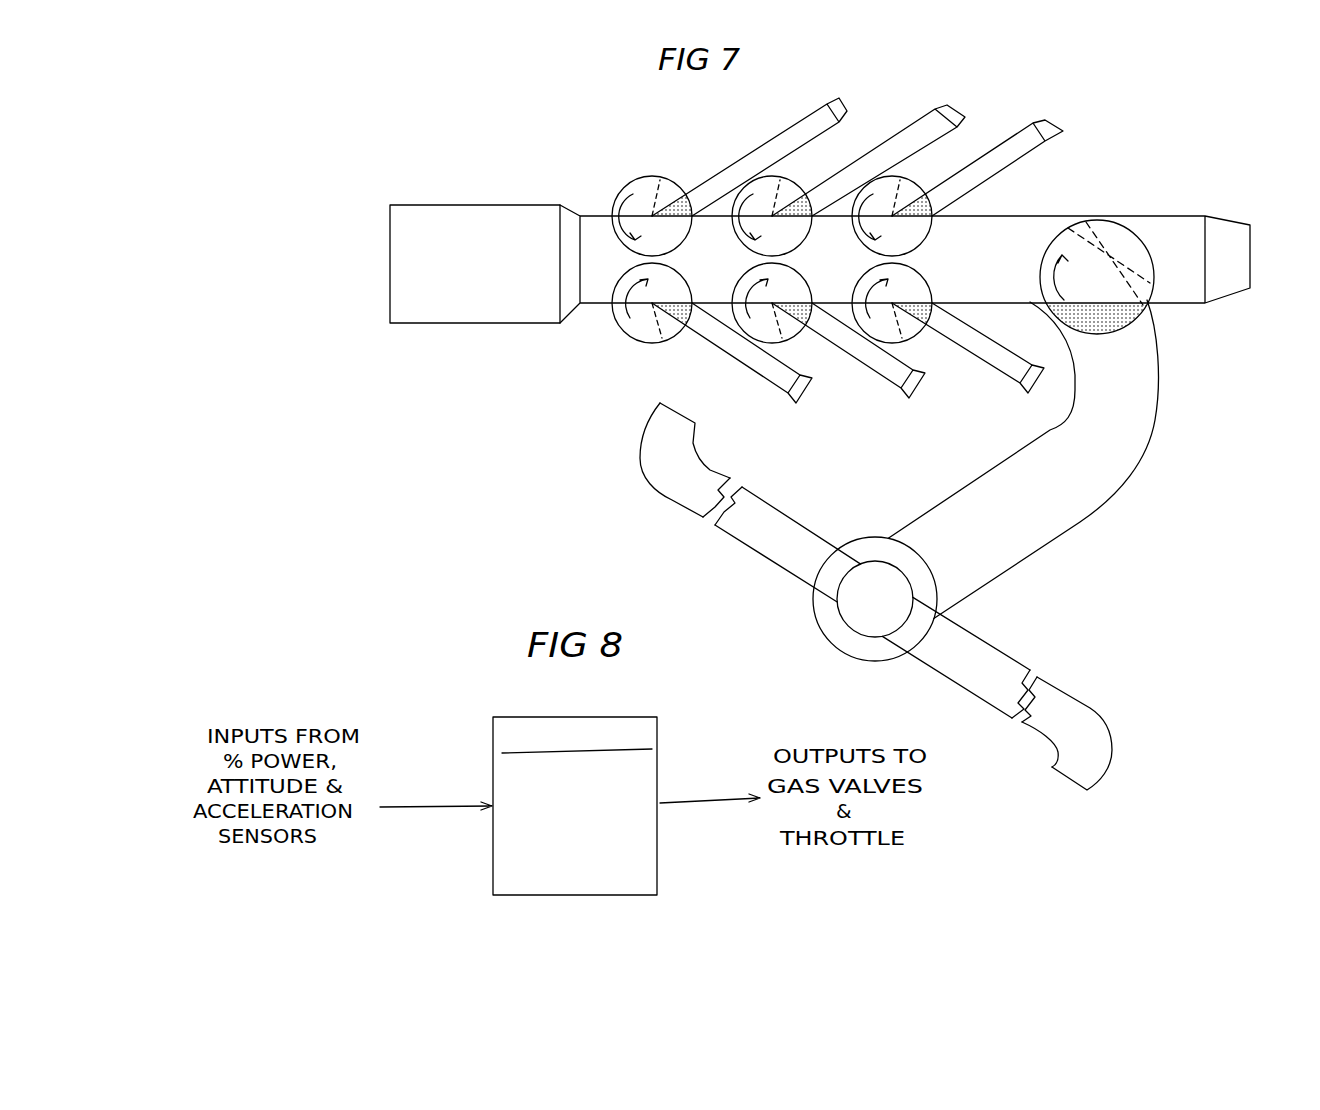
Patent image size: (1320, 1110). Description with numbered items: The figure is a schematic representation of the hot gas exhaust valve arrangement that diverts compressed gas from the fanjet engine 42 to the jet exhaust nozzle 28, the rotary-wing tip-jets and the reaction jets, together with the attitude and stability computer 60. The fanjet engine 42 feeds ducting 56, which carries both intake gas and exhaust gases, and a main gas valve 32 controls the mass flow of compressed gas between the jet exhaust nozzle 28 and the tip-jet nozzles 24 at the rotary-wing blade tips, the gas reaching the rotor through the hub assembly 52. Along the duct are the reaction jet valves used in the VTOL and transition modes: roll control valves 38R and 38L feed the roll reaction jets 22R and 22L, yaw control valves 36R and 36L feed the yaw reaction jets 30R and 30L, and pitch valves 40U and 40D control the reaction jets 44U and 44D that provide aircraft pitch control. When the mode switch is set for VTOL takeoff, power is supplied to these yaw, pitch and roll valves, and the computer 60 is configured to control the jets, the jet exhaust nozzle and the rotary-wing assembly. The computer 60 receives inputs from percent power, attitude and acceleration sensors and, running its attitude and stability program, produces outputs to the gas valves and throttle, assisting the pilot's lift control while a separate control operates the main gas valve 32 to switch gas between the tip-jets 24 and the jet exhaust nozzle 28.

In FIG. 7, the fanjet engine 42 is at (472, 217).
In FIG. 7, the jet exhaust nozzle 28 is at (1233, 237).
In FIG. 7, the roll control valve 38R is at (652, 183).
In FIG. 7, the roll control valve 38L is at (637, 330).
In FIG. 7, the yaw control valve 36R is at (776, 178).
In FIG. 7, the yaw control valve 36L is at (774, 343).
In FIG. 7, the yaw reaction jet 30R is at (953, 106).
In FIG. 7, the yaw reaction jet 30L is at (893, 343).
In FIG. 7, the roll reaction jet 22R is at (843, 98).
In FIG. 7, the roll reaction jet 22L is at (807, 400).
In FIG. 7, the pitch valve 40U is at (896, 177).
In FIG. 7, the pitch valve 40D is at (922, 386).
In FIG. 7, the reaction jet 44U is at (1043, 120).
In FIG. 7, the reaction jet 44D is at (1033, 383).
In FIG. 7, the main gas valve 32 is at (1112, 232).
In FIG. 7, the ducting 56 is at (1032, 228).
In FIG. 7, the hub assembly 52 is at (837, 637).
In FIG. 7, the nozzle 24 is at (675, 425).
In FIG. 8, the computer 60 is at (512, 717).